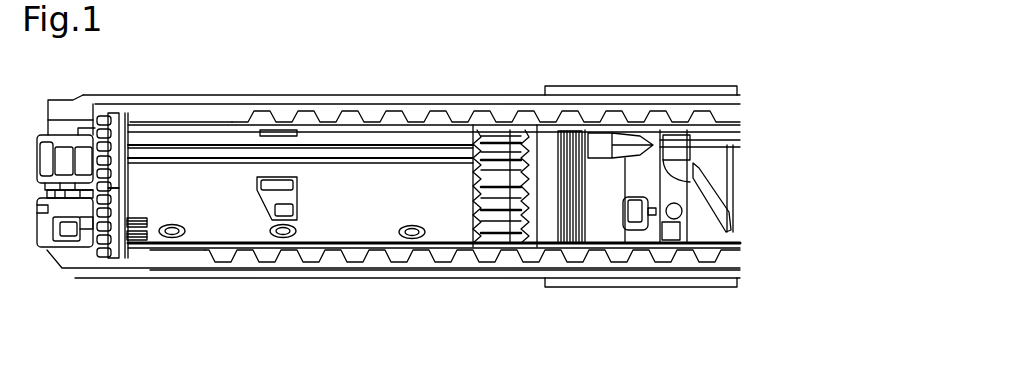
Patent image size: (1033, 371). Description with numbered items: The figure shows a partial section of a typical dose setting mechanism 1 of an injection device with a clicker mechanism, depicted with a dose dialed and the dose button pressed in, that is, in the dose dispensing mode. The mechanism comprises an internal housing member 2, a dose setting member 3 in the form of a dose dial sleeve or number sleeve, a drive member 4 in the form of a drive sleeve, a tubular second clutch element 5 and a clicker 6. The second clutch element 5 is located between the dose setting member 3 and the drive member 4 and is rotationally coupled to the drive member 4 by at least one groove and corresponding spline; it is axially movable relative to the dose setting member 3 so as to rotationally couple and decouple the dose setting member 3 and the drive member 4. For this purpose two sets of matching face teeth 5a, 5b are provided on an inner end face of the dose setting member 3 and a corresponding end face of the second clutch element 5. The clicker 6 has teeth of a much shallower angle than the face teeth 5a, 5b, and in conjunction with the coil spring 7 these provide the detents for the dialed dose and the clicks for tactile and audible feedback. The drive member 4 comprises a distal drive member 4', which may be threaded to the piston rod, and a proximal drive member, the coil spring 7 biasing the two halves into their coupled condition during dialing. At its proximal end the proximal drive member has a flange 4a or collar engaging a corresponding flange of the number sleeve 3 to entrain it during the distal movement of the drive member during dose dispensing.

The dose setting mechanism 1 is at (357, 88).
The housing member 2 is at (257, 252).
The dose setting member 3 is at (343, 261).
The drive member 4 is at (65, 122).
The flange 4a is at (53, 245).
The distal drive member 4' is at (681, 236).
The second clutch element 5 is at (190, 210).
The face teeth 5a is at (108, 245).
The face teeth 5b is at (84, 126).
The clicker 6 is at (504, 232).
The coil spring 7 is at (574, 168).